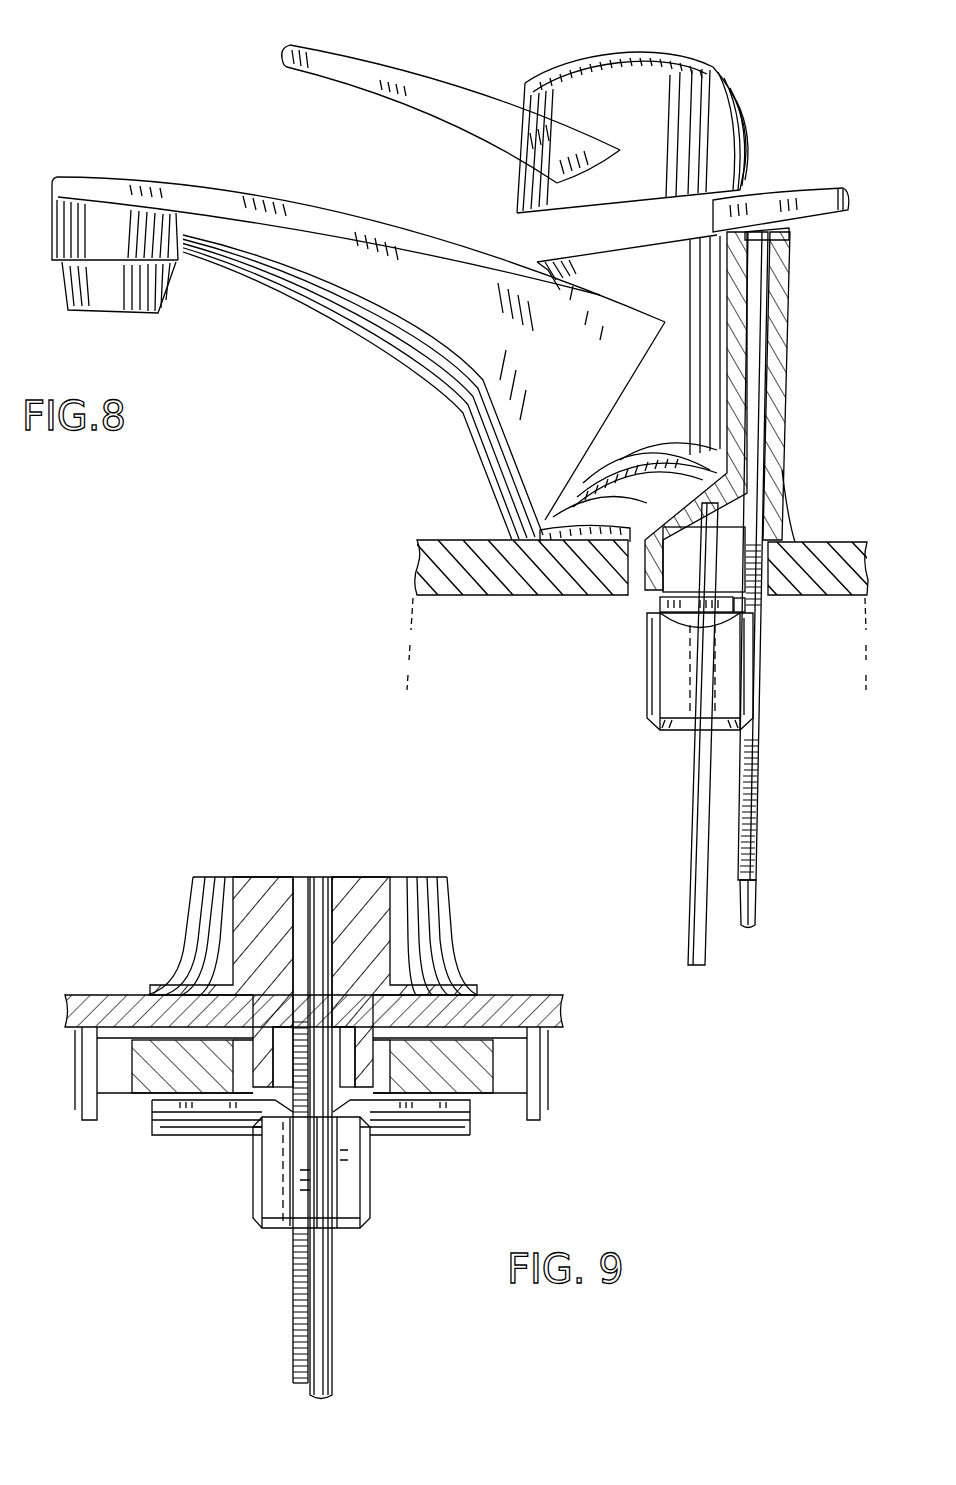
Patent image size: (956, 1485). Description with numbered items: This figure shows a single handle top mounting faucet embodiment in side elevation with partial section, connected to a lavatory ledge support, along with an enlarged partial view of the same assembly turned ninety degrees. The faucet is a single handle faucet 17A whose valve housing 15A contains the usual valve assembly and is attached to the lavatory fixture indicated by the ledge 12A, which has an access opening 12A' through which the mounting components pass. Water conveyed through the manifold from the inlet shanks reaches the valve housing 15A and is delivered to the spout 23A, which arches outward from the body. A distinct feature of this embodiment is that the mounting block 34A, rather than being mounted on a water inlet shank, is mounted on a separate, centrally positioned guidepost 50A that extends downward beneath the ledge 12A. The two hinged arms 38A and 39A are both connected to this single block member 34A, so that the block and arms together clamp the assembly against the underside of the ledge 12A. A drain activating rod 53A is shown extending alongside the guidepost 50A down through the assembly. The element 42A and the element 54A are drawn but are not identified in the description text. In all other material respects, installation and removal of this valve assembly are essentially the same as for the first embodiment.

In FIG. 8, the ledge 12A is at (628, 615).
In FIG. 9, the ledge 12A is at (338, 1057).
In FIG. 9, the access opening 12A' is at (280, 1141).
In FIG. 8, the valve housing 15A is at (668, 432).
In FIG. 9, the valve housing 15A is at (453, 970).
In FIG. 8, the single handle faucet 17A is at (733, 130).
In FIG. 8, the spout 23A is at (203, 180).
In FIG. 8, the mounting block 34A is at (647, 680).
In FIG. 9, the mounting block 34A is at (370, 1207).
In FIG. 9, the hinged arm 38A is at (223, 1137).
In FIG. 8, the hinged arm 39A is at (660, 603).
In FIG. 8, the mounting stud 42A is at (787, 480).
In FIG. 9, the mounting stud 42A is at (300, 877).
In FIG. 8, the guidepost 50A is at (693, 802).
In FIG. 8, the drain activating rod 53A is at (753, 910).
In FIG. 9, the drain activating rod 53A is at (333, 877).
In FIG. 8, the lever 54A is at (830, 153).